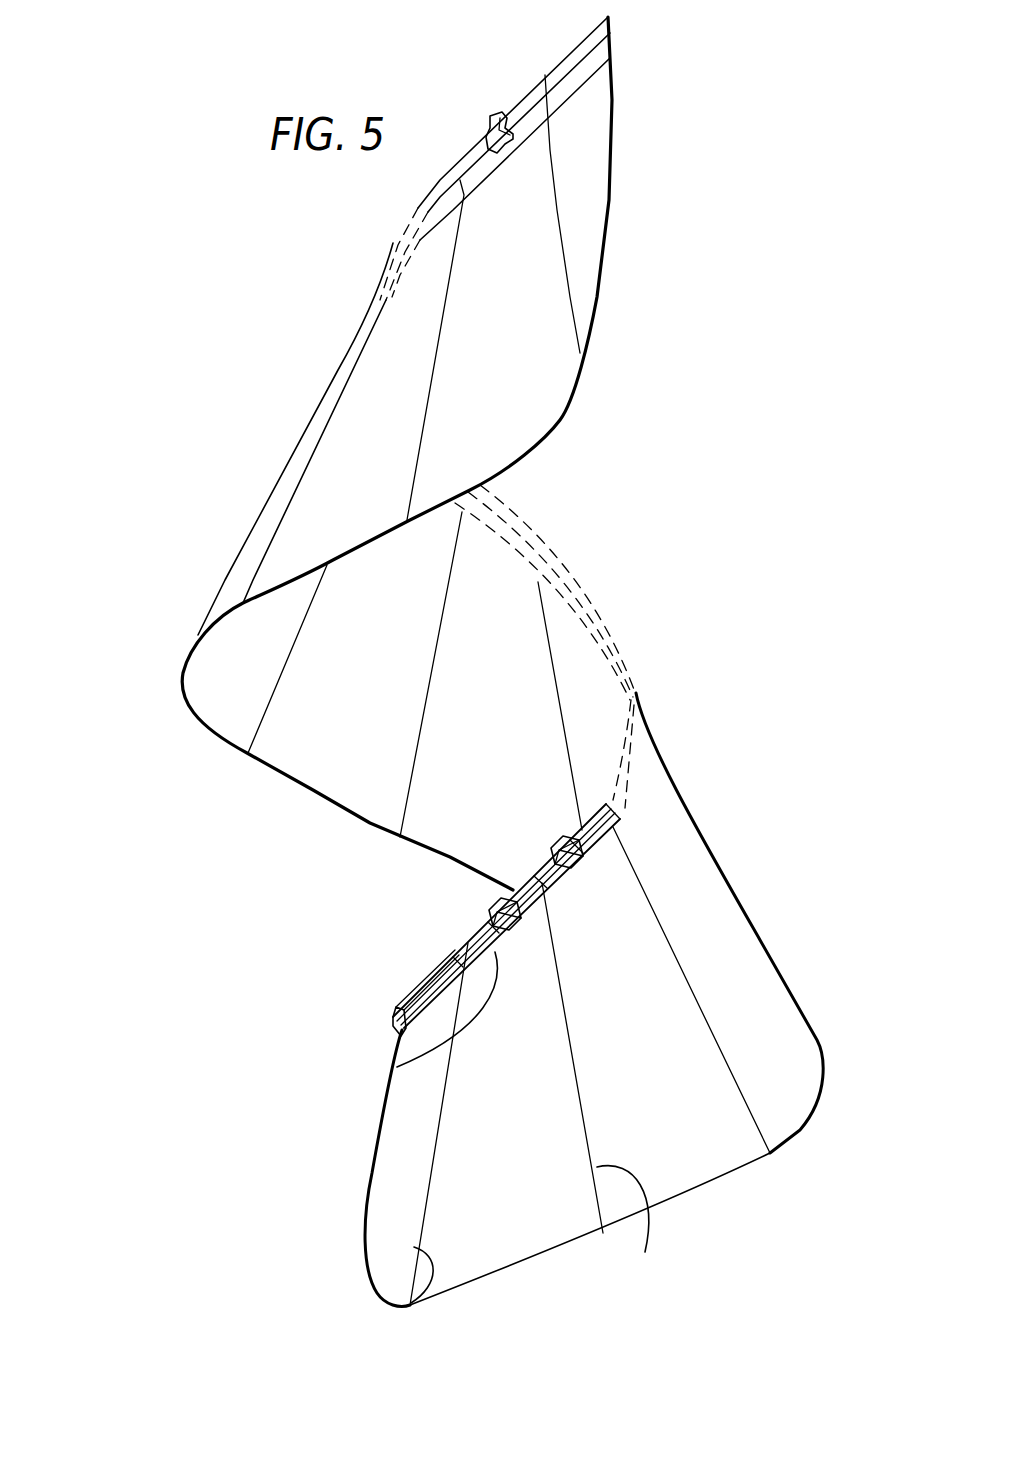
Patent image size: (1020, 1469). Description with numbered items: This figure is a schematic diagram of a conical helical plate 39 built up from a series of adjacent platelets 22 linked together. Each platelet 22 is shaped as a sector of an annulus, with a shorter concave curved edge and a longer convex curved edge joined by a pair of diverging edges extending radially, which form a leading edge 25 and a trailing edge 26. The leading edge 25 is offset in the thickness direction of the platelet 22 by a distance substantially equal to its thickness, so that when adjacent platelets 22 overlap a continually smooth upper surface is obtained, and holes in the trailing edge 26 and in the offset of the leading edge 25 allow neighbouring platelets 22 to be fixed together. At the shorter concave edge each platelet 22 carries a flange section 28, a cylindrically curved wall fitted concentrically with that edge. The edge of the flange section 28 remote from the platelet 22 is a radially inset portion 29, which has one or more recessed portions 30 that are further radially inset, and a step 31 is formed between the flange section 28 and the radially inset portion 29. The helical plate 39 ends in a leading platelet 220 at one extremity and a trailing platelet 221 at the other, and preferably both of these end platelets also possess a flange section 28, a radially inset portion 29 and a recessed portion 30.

The conical helical plate 39 is at (210, 478).
The leading platelet 220 is at (595, 145).
The trailing platelet 221 is at (393, 1162).
The platelet 22 is at (542, 1215).
The leading edge 25 is at (629, 1232).
The trailing edge 26 is at (410, 1307).
The flange section 28 is at (408, 1060).
The radially inset portion of the flange 29 is at (468, 943).
The recessed portion 30 is at (490, 907).
The step 31 is at (417, 1000).